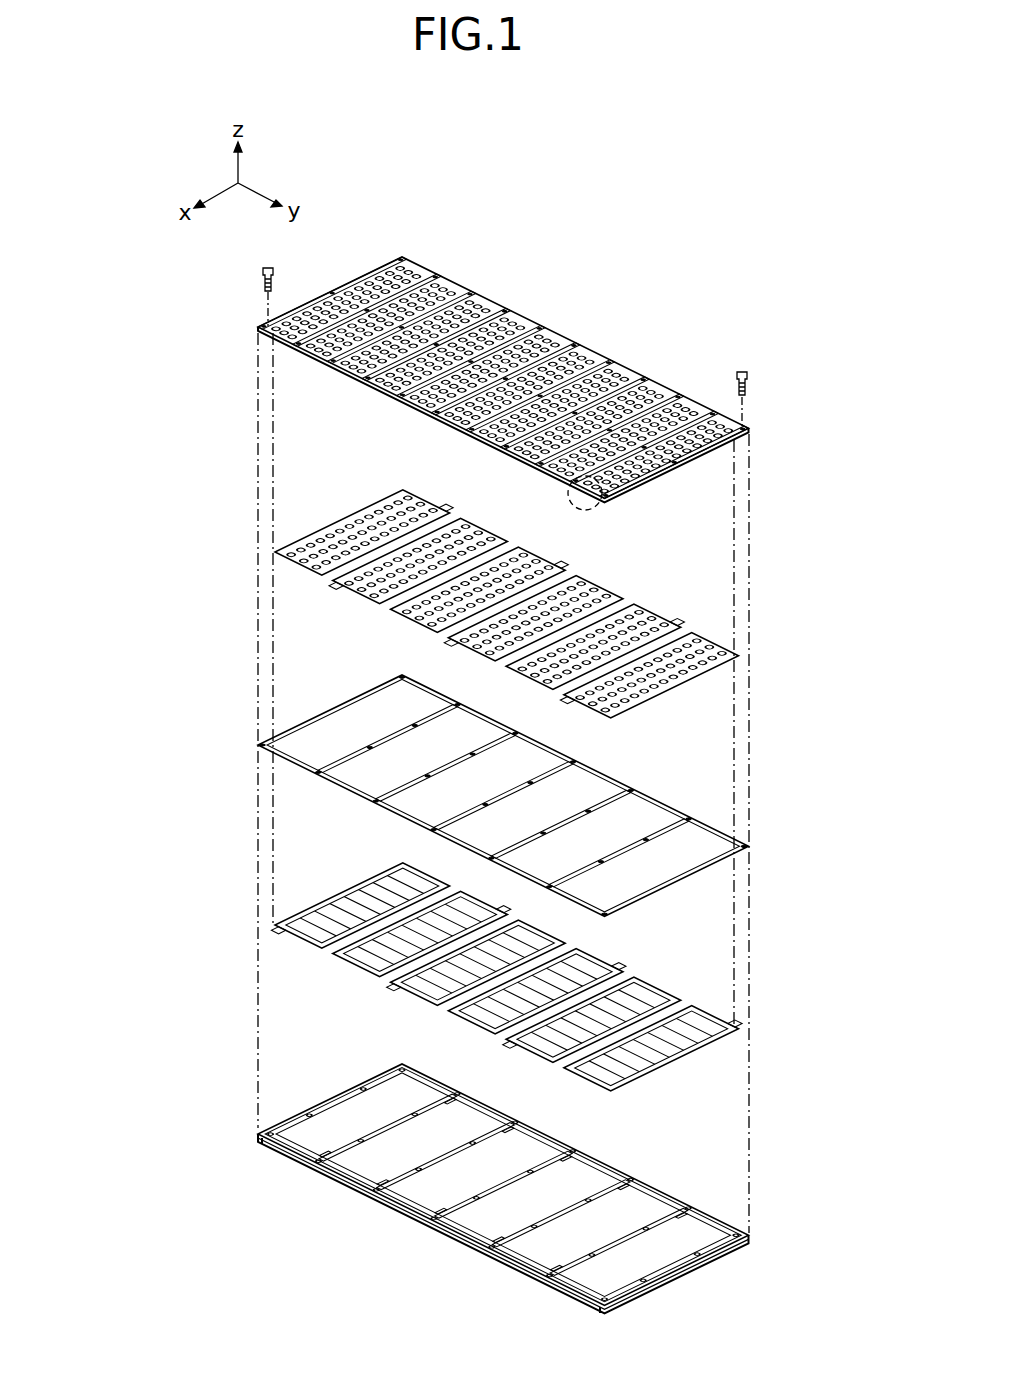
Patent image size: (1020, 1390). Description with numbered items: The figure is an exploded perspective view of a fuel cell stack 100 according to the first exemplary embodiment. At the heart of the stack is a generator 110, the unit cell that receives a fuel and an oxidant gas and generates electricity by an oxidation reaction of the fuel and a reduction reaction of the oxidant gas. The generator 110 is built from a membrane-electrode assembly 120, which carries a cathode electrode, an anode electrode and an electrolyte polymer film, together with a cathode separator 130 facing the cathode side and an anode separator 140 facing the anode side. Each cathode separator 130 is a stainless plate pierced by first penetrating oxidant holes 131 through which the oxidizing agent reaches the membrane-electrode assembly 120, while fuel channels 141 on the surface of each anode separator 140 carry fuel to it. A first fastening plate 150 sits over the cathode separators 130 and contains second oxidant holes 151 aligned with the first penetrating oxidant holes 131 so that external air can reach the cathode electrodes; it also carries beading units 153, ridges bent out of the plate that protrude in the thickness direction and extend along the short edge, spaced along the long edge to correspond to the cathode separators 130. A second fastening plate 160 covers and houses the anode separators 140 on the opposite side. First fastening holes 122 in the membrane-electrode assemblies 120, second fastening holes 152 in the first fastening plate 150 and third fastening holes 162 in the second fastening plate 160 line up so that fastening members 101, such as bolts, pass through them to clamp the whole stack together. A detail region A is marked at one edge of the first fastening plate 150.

The fuel cell stack 100 is at (380, 203).
The fastening member 101 is at (262, 283).
The generator 110 is at (165, 423).
The membrane-electrode assembly 120 is at (546, 795).
The first fastening hole 122 is at (678, 785).
The cathode separator 130 is at (458, 575).
The first penetrating oxidant hole 131 is at (306, 494).
The anode separator 140 is at (464, 958).
The fuel channel 141 is at (318, 884).
The first fastening plate 150 is at (533, 386).
The second oxidant hole 151 is at (332, 293).
The second fastening hole 152 is at (674, 462).
The beading unit 153 is at (471, 362).
The second fastening plate 160 is at (541, 1188).
The third fastening hole 162 is at (666, 1171).
The detail region A is at (598, 505).